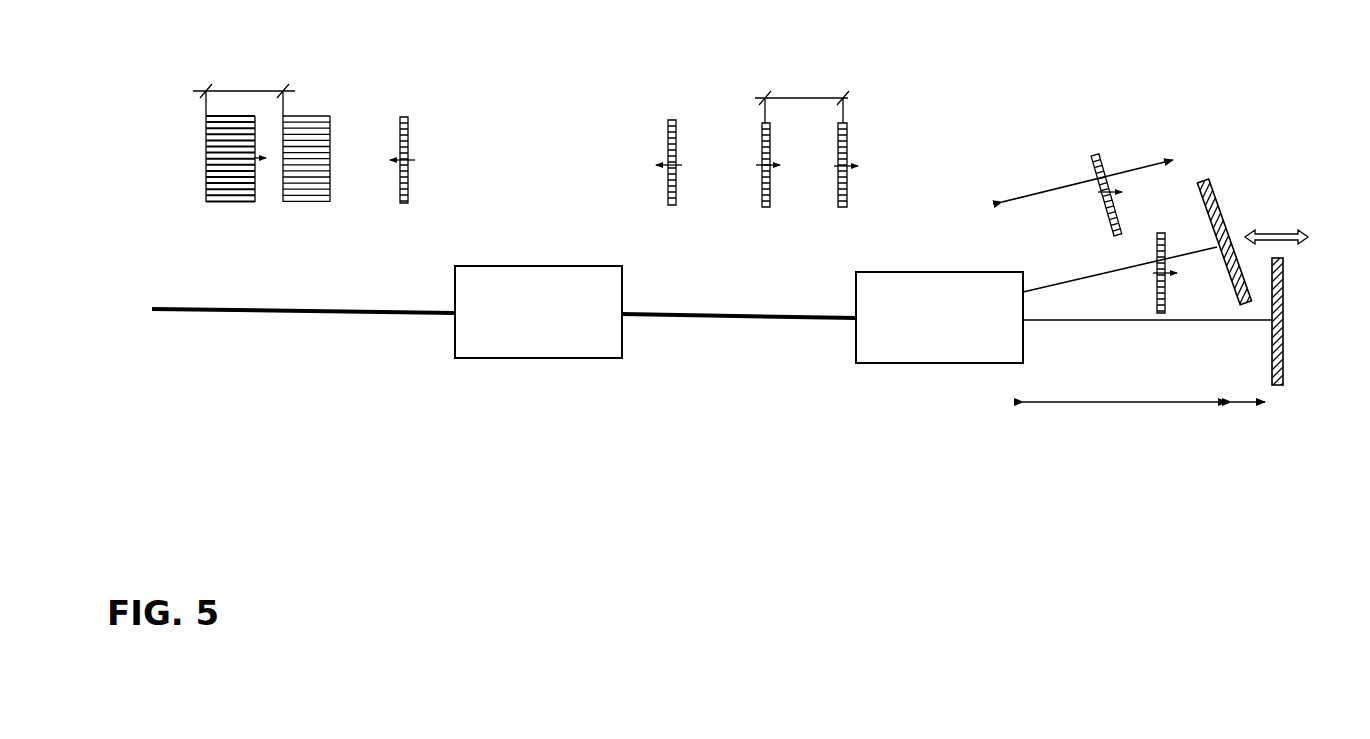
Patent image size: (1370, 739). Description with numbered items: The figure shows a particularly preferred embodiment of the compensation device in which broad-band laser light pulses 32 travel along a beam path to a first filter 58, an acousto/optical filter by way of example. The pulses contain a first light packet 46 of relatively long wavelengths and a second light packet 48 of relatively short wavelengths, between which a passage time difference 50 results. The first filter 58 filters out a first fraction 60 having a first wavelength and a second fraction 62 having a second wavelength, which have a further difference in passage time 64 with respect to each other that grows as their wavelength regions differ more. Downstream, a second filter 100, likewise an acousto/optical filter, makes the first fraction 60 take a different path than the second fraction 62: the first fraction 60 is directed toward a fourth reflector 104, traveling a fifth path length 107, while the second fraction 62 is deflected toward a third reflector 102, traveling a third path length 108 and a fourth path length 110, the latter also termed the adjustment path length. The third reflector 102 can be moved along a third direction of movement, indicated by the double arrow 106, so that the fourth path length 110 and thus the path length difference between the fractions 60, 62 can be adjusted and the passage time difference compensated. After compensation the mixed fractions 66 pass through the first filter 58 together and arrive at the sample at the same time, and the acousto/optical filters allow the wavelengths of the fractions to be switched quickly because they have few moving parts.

The broad-band laser light pulses 32 is at (246, 313).
The first light packet 46 is at (206, 130).
The second light packet 48 is at (330, 132).
The passage time difference 50 is at (239, 91).
The first filter 58 is at (528, 359).
The first fraction 60 is at (762, 133).
The second fraction 62 is at (847, 140).
The further difference in passage time 64 is at (811, 98).
The mixed fractions 66 is at (408, 130).
The second filter 100 is at (920, 364).
The third reflector 102 is at (1283, 340).
The fourth reflector 104 is at (1212, 190).
The mirror translation direction 106 is at (1283, 234).
The fifth path length 107 is at (1045, 190).
The third path length 108 is at (1103, 405).
The fourth path length 110 is at (1247, 405).